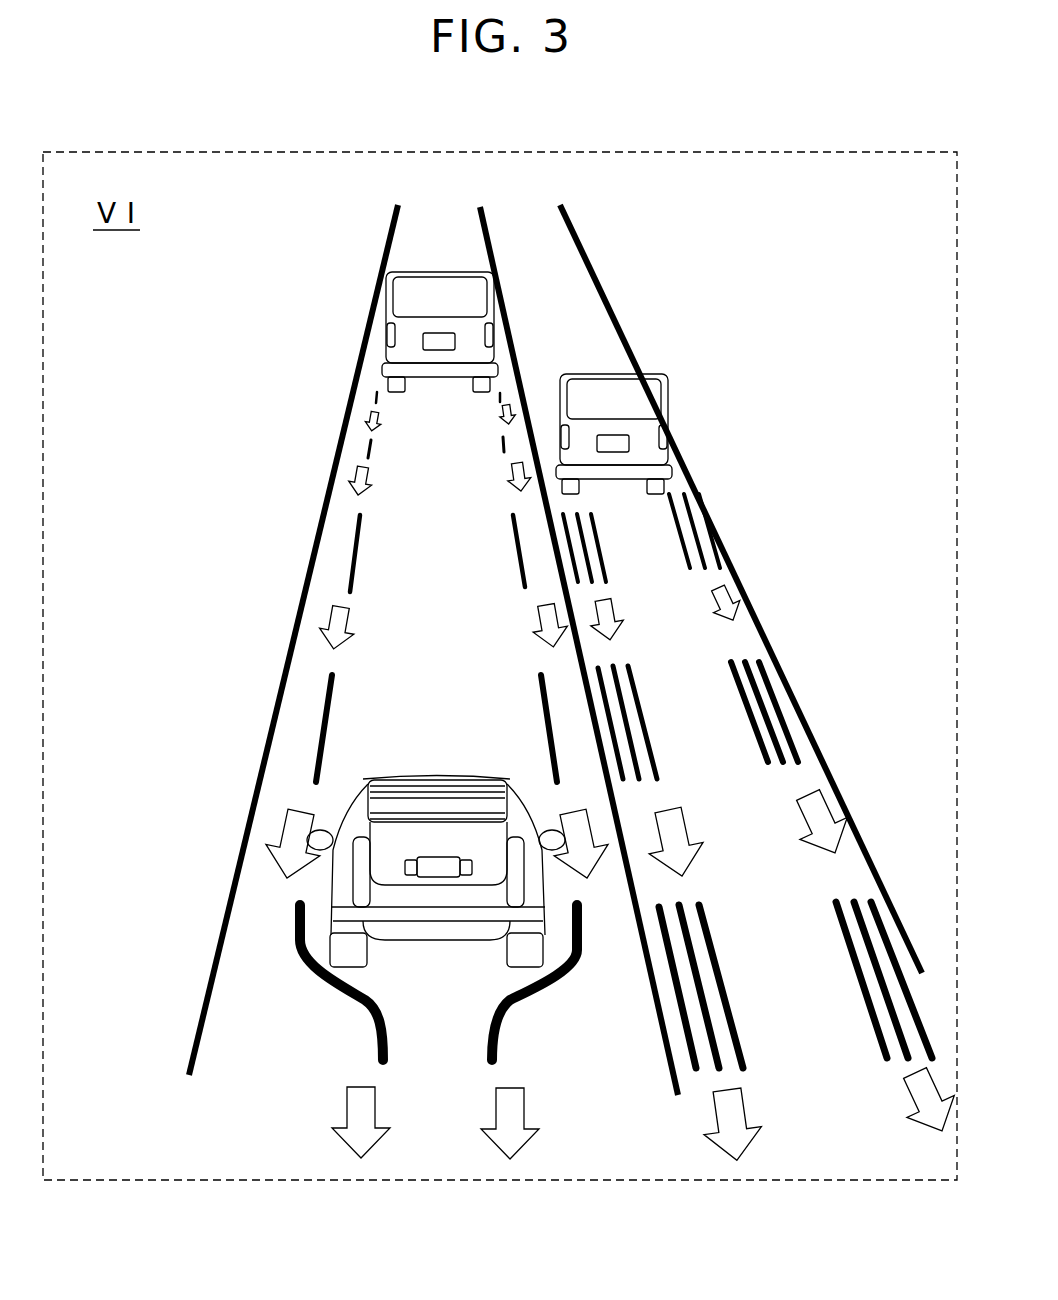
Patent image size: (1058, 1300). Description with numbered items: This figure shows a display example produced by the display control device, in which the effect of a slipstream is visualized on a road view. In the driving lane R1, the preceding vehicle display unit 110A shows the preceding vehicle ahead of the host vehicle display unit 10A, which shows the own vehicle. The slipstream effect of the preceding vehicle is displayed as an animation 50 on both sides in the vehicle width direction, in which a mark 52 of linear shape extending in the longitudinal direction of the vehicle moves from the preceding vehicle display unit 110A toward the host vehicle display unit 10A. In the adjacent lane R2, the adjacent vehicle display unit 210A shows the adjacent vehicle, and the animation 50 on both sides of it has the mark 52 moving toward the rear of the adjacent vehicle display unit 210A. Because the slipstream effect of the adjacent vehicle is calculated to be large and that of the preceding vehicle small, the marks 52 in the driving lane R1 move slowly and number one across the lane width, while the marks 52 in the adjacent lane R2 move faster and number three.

The preceding vehicle display unit 110A is at (403, 298).
The adjacent vehicle display unit 210A is at (655, 400).
The host vehicle display unit 10A is at (448, 777).
The animation 50 is at (342, 538).
The mark 52 is at (320, 722).
The driving lane R1 is at (240, 997).
The adjacent lane R2 is at (840, 863).